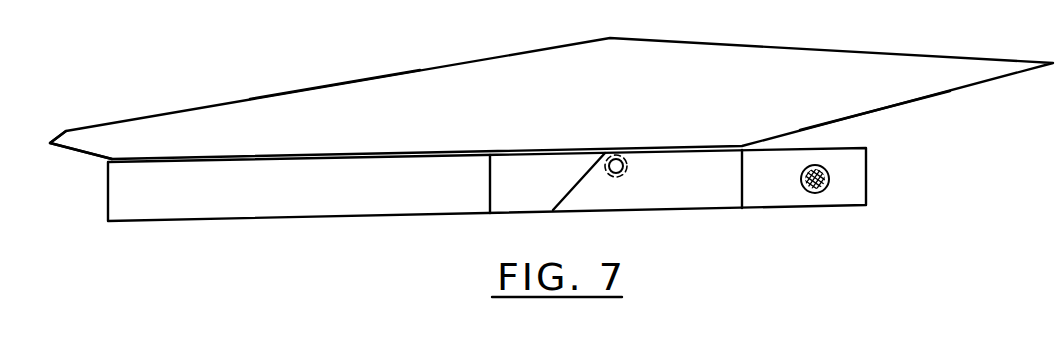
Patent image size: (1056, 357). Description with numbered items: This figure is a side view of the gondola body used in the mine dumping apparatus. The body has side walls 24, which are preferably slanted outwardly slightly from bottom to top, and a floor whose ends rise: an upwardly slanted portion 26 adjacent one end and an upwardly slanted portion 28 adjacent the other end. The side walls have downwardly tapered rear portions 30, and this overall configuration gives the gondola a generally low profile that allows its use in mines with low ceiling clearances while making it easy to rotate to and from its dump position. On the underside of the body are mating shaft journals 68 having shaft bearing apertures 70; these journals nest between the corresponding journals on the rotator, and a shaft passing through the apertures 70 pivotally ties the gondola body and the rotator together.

The side walls 24 is at (516, 121).
The upwardly slanted portion 26 is at (898, 105).
The upwardly slanted portion 28 is at (90, 156).
The downwardly tapered rear portions 30 is at (296, 92).
The shaft journals 68 is at (622, 175).
The shaft bearing apertures 70 is at (619, 166).